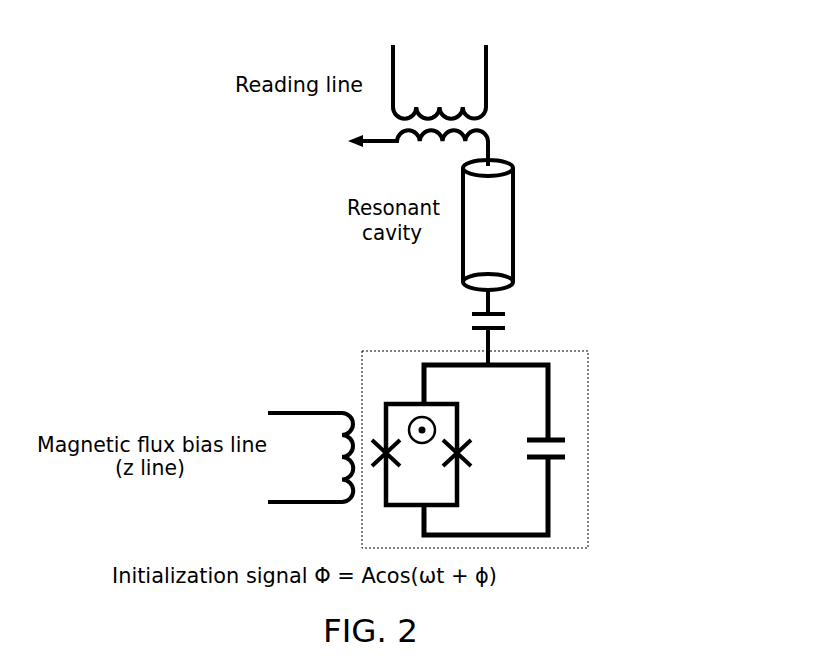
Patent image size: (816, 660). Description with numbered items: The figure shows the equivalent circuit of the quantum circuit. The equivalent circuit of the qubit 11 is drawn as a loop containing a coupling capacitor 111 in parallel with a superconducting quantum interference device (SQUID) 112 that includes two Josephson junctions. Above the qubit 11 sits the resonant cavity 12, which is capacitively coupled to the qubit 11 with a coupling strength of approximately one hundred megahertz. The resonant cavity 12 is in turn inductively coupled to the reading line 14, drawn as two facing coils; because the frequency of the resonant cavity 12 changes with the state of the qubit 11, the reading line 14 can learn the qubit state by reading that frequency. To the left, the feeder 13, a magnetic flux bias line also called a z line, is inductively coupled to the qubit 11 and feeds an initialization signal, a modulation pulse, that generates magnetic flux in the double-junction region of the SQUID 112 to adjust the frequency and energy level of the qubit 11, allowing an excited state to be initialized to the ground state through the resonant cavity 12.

The reading line 14 is at (486, 58).
The resonant cavity 12 is at (515, 215).
The qubit 11 is at (578, 350).
The superconducting quantum interference device (SQUID) 112 is at (400, 402).
The coupling capacitor 111 is at (563, 437).
The feeder 13 is at (283, 411).